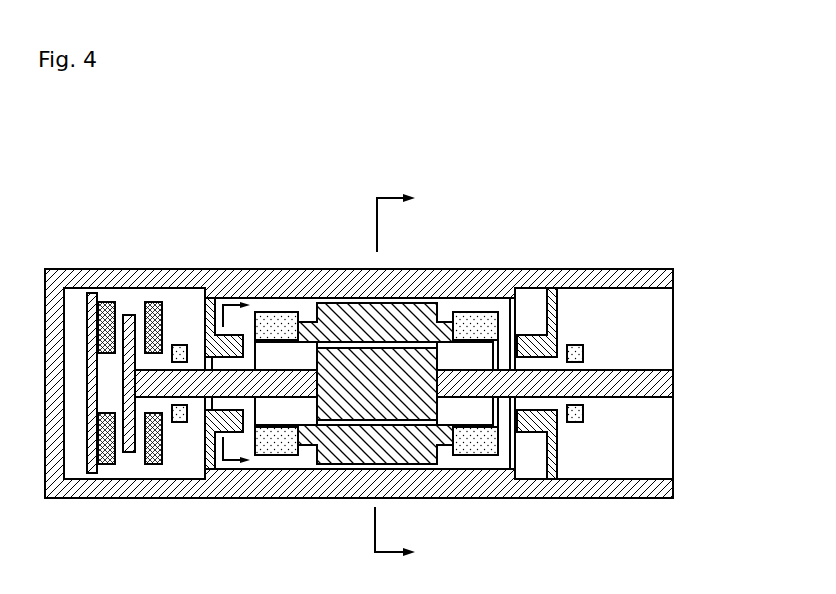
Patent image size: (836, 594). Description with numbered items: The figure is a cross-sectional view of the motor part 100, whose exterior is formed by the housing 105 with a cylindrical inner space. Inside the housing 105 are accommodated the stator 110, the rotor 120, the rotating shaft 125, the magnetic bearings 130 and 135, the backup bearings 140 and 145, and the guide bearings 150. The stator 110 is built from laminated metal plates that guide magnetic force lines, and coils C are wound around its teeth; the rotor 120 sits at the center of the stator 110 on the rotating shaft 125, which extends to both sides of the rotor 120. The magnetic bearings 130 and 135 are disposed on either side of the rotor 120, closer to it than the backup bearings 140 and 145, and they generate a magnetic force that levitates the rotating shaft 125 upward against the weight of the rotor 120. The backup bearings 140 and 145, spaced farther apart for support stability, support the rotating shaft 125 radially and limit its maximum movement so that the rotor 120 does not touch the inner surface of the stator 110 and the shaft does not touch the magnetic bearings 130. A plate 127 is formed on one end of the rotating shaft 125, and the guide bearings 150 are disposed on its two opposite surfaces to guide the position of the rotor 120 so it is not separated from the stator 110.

The motor part 100 is at (97, 140).
The housing 105 is at (643, 277).
The stator 110 is at (335, 318).
The rotor 120 is at (360, 360).
The rotating shaft 125 is at (662, 383).
The plate 127 is at (127, 315).
The magnetic bearing 130 is at (214, 305).
The magnetic bearing 135 is at (553, 300).
The backup bearing 140 is at (183, 405).
The backup bearing 145 is at (577, 345).
The guide bearing 150 is at (102, 293).
The coil C is at (480, 317).